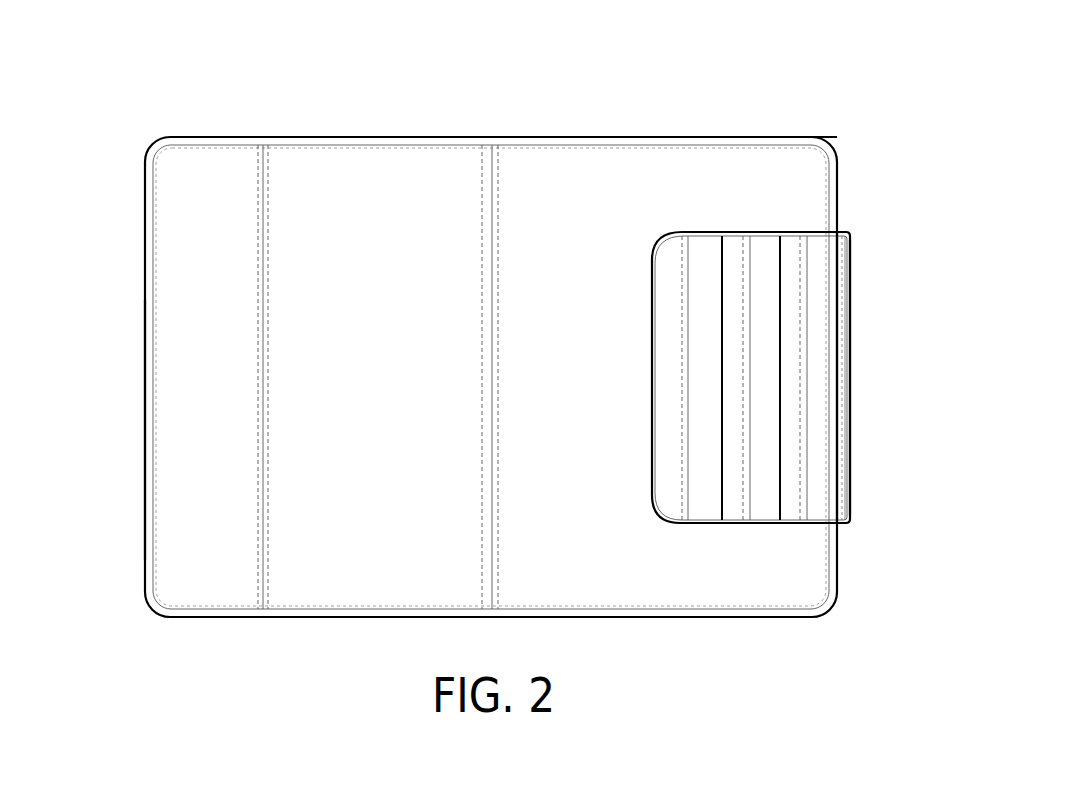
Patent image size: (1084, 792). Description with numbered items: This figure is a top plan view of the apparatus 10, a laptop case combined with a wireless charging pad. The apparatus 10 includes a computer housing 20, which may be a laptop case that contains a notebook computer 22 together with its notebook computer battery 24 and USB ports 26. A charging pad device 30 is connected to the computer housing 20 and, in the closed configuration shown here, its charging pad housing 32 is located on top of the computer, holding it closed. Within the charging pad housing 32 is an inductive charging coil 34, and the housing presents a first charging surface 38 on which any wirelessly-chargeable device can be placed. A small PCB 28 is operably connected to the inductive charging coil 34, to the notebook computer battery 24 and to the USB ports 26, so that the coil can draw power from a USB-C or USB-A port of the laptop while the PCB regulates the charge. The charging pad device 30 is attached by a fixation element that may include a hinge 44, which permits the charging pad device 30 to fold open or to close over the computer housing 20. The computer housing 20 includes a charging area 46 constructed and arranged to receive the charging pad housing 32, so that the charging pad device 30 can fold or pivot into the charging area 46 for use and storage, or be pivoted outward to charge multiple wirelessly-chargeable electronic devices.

The apparatus 10 is at (135, 66).
The computer housing 20 is at (312, 137).
The notebook computer 22 is at (415, 137).
The notebook computer battery 24 is at (513, 137).
The USB ports 26 is at (145, 265).
The small PCB 28 is at (145, 435).
The charging pad device 30 is at (822, 503).
The charging pad housing 32 is at (830, 250).
The inductive charging coil 34 is at (822, 467).
The first charging surface 38 is at (823, 390).
The hinge 44 is at (850, 327).
The charging area 46 is at (818, 232).